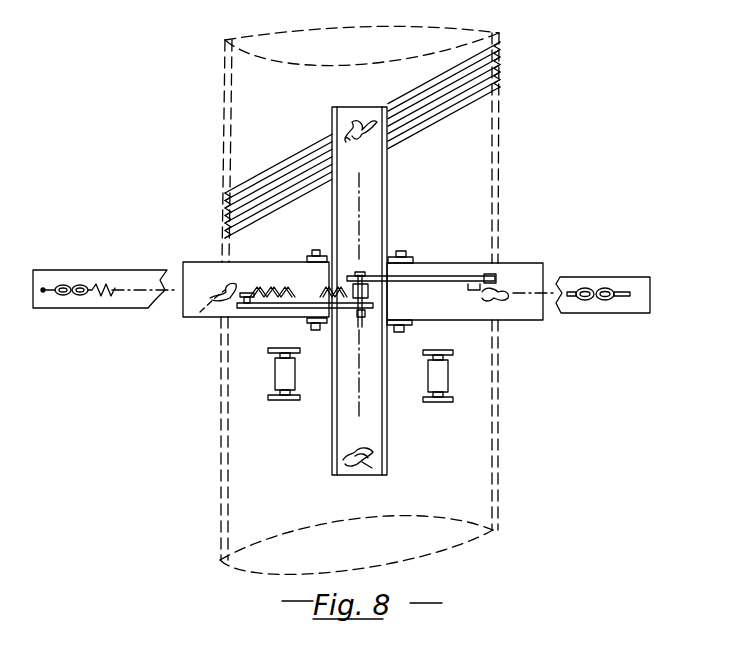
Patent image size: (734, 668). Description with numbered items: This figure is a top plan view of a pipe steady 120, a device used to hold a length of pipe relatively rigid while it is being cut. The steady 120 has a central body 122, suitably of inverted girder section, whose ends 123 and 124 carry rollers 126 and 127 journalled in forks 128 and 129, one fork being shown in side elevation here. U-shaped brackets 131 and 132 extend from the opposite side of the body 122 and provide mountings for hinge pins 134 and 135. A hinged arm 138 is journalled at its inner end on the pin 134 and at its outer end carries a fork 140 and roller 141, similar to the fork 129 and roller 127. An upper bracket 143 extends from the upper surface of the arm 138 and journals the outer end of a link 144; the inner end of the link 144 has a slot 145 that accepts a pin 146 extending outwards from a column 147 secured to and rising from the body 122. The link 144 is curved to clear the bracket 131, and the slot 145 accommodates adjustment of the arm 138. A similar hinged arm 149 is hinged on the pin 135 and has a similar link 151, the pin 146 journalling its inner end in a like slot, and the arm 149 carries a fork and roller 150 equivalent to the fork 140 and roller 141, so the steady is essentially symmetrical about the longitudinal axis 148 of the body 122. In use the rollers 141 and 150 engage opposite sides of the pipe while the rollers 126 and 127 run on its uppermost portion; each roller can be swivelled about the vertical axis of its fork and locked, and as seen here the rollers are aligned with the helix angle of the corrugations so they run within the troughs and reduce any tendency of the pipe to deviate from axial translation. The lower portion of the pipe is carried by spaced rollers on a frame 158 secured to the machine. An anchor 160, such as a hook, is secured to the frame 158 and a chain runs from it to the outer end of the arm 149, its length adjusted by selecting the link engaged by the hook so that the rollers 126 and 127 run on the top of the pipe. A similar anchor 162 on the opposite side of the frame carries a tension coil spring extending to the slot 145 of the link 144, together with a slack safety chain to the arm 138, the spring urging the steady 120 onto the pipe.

The steady 120 is at (216, 243).
The central body 122 is at (372, 187).
The end 123 is at (368, 468).
The end 124 is at (347, 115).
The roller 126 is at (345, 136).
The roller 127 is at (397, 452).
The fork 128 is at (346, 151).
The fork 129 is at (343, 453).
The U-shaped bracket 131 is at (308, 252).
The U-shaped bracket 132 is at (412, 255).
The hinge pin 134 is at (315, 249).
The hinge pin 135 is at (430, 236).
The hinged arm 138 is at (220, 308).
The fork 140 is at (224, 271).
The roller 141 is at (178, 313).
The upper bracket 143 is at (253, 289).
The link 144 is at (256, 308).
The slot 145 is at (384, 332).
The pin 146 is at (360, 312).
The column 147 is at (368, 291).
The longitudinal axis 148 is at (360, 210).
The hinged arm 149 is at (458, 274).
The fork and roller 150 is at (488, 286).
The link 151 is at (480, 300).
The frame 158 is at (613, 277).
The anchor 160 is at (612, 303).
The anchor 162 is at (36, 308).